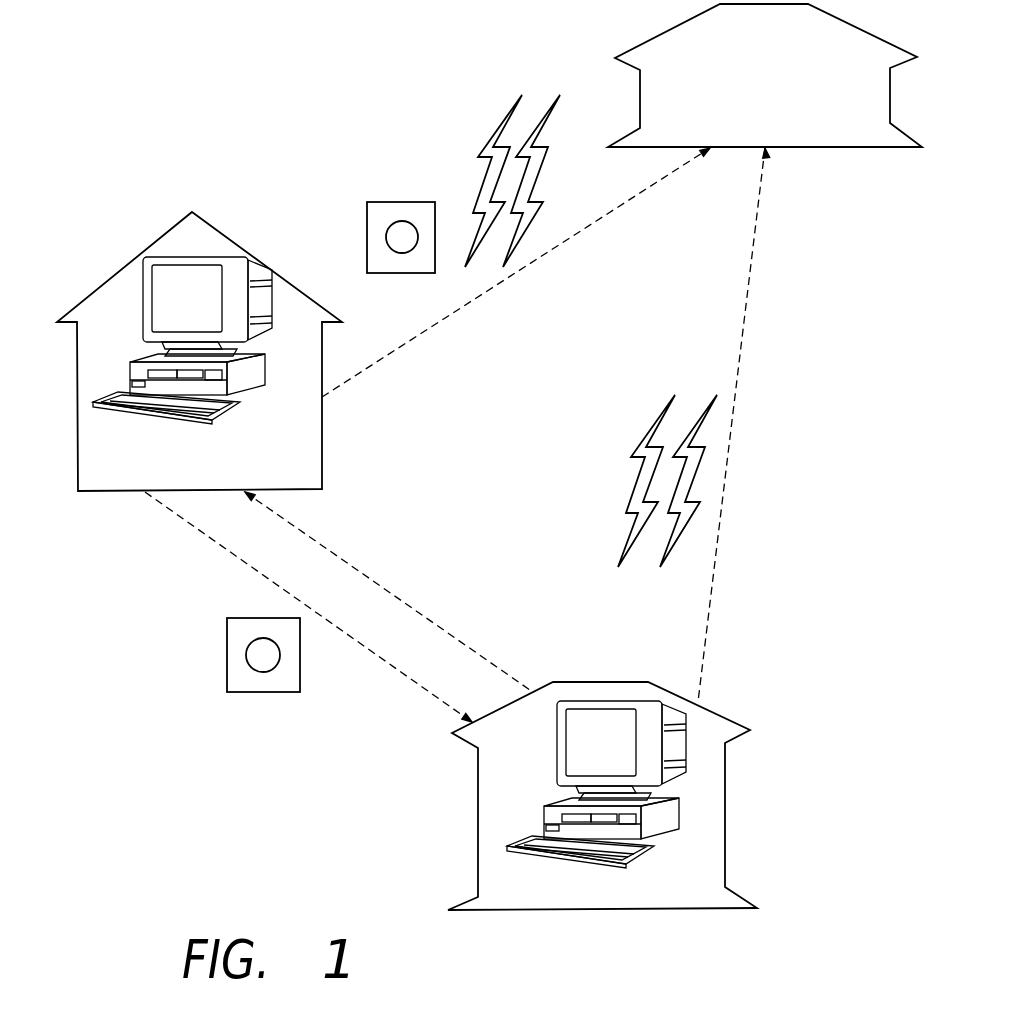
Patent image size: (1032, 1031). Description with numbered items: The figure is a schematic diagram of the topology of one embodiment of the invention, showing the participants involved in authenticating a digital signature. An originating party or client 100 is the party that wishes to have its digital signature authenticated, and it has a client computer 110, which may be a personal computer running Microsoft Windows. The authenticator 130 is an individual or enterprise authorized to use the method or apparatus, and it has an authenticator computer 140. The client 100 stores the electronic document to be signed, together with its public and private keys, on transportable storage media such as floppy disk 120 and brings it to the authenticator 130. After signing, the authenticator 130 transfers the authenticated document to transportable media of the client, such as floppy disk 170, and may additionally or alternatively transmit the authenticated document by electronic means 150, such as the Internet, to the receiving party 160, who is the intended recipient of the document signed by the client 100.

The originating party or client 100 is at (322, 445).
The client computer 110 is at (207, 253).
The floppy disk 120 is at (227, 650).
The authenticator 130 is at (707, 912).
The authenticator computer 140 is at (677, 815).
The electronic means 150 is at (715, 560).
The receiving party 160 is at (845, 148).
The floppy disk 170 is at (390, 200).